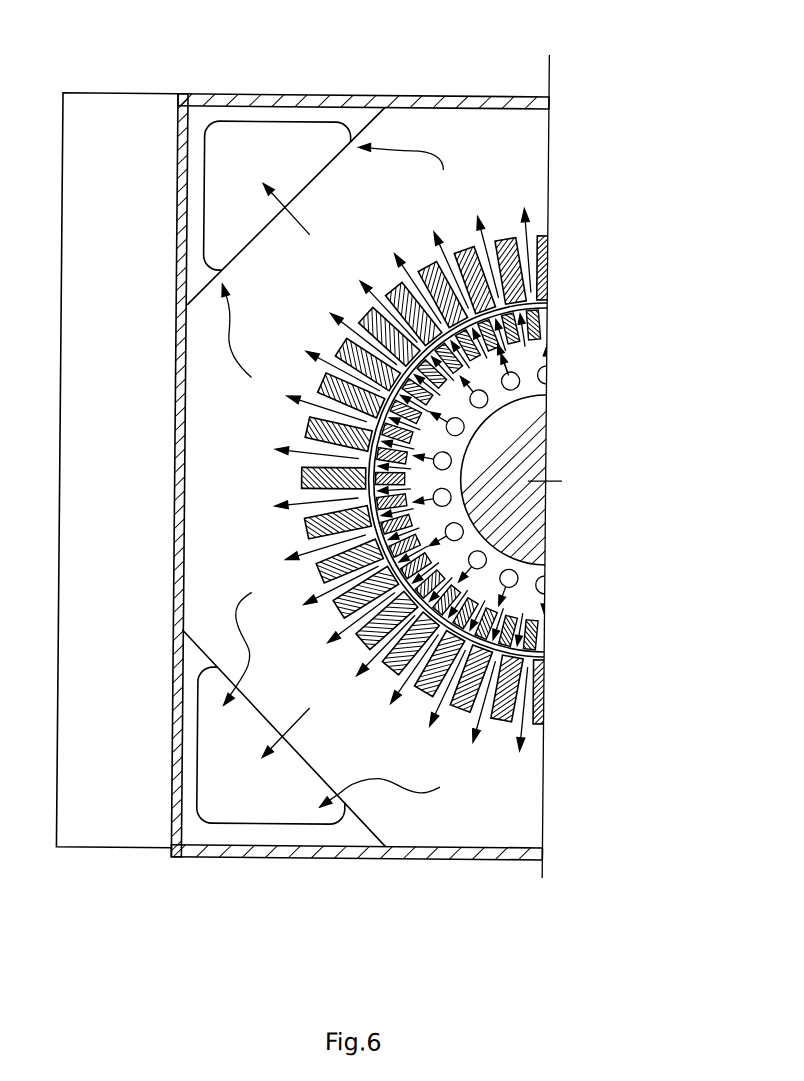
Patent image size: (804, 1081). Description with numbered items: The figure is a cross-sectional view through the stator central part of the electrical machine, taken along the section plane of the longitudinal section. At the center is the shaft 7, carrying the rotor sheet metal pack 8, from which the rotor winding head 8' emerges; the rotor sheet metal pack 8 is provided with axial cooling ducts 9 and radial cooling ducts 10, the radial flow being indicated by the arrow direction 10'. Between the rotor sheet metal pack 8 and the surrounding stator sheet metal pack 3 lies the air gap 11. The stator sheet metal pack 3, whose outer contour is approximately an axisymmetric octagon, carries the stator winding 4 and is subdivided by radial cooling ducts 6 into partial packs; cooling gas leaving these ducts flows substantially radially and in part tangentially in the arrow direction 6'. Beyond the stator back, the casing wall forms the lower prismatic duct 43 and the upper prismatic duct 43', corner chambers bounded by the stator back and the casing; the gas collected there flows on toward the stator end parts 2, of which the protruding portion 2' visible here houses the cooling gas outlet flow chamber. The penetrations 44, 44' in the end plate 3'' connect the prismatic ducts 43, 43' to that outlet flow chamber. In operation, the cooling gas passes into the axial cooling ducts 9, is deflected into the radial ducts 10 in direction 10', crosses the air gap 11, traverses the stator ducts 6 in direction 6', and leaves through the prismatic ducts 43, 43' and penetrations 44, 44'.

The stator end part 2 is at (145, 475).
The housing end wall 2' is at (117, 433).
The sheet metal pack 3 is at (317, 478).
The end plate 3'' is at (286, 485).
The stator winding 4 is at (513, 703).
The radial cooling duct 6 is at (444, 353).
The flow direction 6' is at (421, 476).
The shaft 7 is at (531, 437).
The rotor sheet metal pack 8 is at (487, 479).
The rotor winding head 8' is at (499, 488).
The axial cooling duct 9 is at (516, 575).
The radial cooling duct 10 is at (517, 480).
The flow direction 10' is at (560, 355).
The air gap 11 is at (520, 305).
The lower prismatic duct 43 is at (355, 891).
The upper prismatic duct 43' is at (364, 70).
The penetration 44 is at (271, 810).
The penetration 44' is at (277, 144).